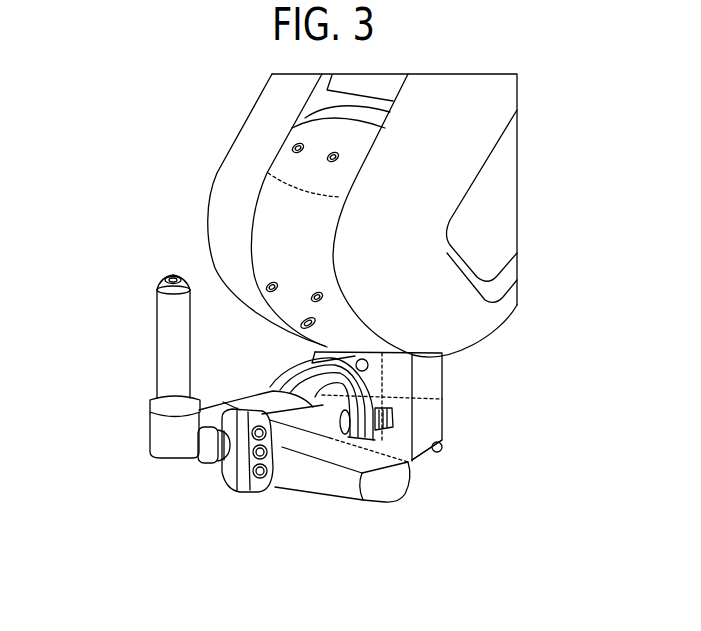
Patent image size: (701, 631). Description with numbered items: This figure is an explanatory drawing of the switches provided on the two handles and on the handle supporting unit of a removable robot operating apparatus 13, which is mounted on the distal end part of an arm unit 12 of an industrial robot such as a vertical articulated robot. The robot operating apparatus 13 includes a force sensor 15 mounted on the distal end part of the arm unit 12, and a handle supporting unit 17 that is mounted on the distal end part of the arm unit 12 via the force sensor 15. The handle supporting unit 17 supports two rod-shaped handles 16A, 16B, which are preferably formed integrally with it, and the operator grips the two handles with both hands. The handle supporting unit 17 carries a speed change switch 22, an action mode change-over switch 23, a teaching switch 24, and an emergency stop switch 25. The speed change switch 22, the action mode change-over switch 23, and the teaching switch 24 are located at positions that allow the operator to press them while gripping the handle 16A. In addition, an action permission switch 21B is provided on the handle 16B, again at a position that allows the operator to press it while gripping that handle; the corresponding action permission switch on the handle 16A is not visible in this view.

The arm unit 12 is at (247, 150).
The robot operating apparatus 13 is at (420, 472).
The force sensor 15 is at (442, 399).
The handle 16A is at (327, 480).
The handle 16B is at (157, 338).
The handle supporting unit 17 is at (283, 400).
The action permission switch 21B is at (170, 273).
The speed change switch 22 is at (237, 490).
The action mode change-over switch 23 is at (257, 493).
The teaching switch 24 is at (225, 472).
The emergency stop switch 25 is at (198, 442).